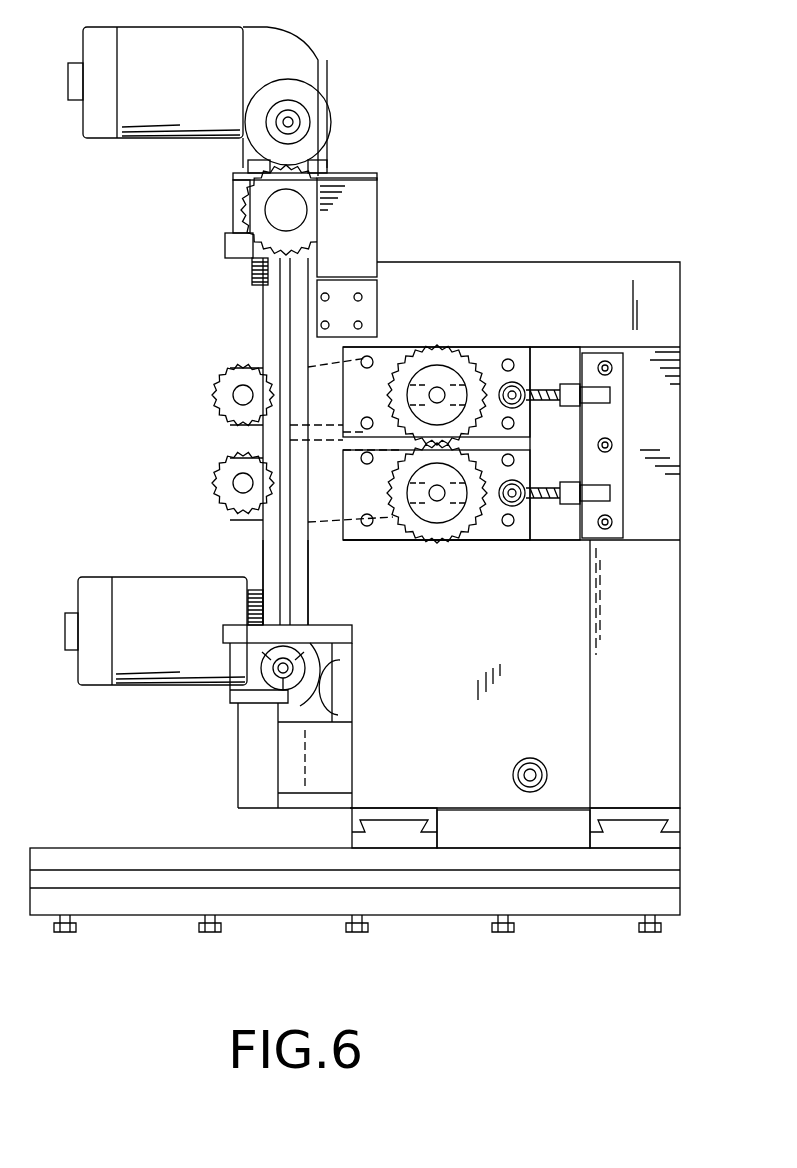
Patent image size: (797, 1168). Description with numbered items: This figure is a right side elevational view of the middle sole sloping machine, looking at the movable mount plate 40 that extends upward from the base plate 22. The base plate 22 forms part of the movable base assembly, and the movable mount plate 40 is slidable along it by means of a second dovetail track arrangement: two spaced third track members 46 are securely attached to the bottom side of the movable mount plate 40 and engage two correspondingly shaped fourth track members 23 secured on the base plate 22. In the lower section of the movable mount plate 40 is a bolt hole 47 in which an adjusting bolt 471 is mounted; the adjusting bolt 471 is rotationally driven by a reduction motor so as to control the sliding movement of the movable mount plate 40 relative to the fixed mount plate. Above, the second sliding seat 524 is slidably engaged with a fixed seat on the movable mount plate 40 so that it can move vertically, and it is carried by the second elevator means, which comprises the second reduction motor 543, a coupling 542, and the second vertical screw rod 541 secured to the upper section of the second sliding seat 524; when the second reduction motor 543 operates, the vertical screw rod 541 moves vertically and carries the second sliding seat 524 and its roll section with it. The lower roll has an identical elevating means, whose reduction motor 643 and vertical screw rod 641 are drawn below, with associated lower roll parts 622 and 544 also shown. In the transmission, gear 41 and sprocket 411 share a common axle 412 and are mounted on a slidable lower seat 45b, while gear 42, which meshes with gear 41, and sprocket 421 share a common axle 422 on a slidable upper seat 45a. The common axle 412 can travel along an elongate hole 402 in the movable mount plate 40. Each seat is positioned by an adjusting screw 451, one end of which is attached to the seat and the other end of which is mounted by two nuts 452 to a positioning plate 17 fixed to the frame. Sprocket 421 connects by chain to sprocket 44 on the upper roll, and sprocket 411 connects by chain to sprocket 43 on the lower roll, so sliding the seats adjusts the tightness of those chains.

The second reduction motor 543 is at (290, 52).
The pulley 544 is at (336, 127).
The coupling 542 is at (258, 211).
The second vertical screw rod 541 is at (250, 274).
The second sliding seat 524 is at (272, 350).
The sprocket 44 is at (231, 370).
The sprocket 43 is at (230, 460).
The guide rod 622 is at (272, 534).
The reduction motor 643 is at (152, 590).
The vertical screw rod 641 is at (247, 612).
The base plate 22 is at (176, 848).
The common axle 412 is at (430, 502).
The sprocket 411 is at (413, 544).
The gear 41 is at (466, 542).
The elongate hole 402 is at (488, 548).
The lower seat 45b is at (508, 545).
The adjusting screw 451 is at (558, 353).
The positioning plate 17 is at (587, 527).
The movable mount plate 40 is at (565, 272).
The common axle 422 is at (433, 392).
The sprocket 421 is at (436, 347).
The gear 42 is at (477, 347).
The upper seat 45a is at (507, 347).
The nuts 452 is at (580, 484).
The adjusting bolt 471 is at (536, 762).
The bolt hole 47 is at (550, 775).
The fourth track members 23 is at (425, 830).
The third track members 46 is at (380, 830).